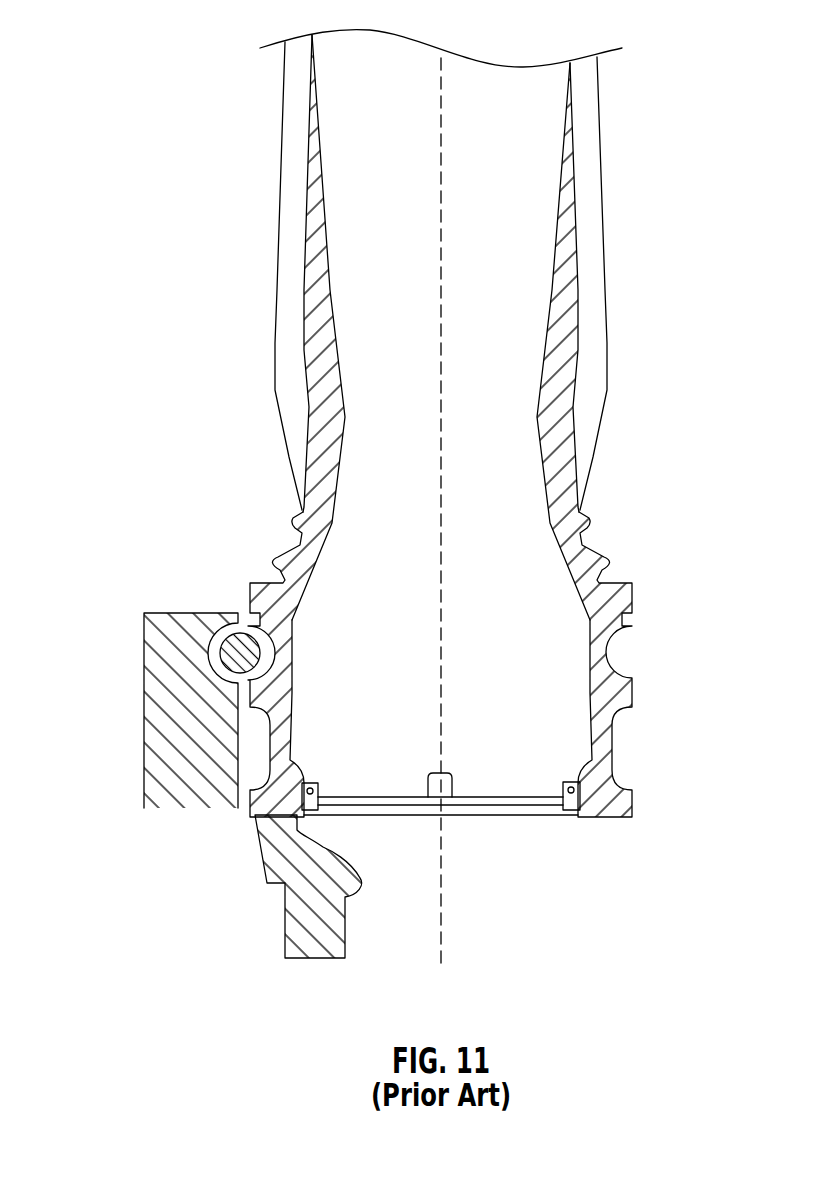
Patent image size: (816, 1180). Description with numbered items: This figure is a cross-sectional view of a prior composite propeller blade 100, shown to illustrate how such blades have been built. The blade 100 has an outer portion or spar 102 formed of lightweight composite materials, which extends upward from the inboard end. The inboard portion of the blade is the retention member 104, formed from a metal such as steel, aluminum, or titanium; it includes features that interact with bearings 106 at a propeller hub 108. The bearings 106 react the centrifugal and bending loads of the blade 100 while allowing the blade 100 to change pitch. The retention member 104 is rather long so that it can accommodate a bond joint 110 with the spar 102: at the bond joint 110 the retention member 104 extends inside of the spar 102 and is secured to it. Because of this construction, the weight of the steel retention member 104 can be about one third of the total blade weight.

The composite propeller blade 100 is at (130, 112).
The spar 102 is at (607, 343).
The retention member 104 is at (614, 652).
The bearings 106 is at (250, 653).
The propeller hub 108 is at (160, 720).
The bond joint 110 is at (307, 355).